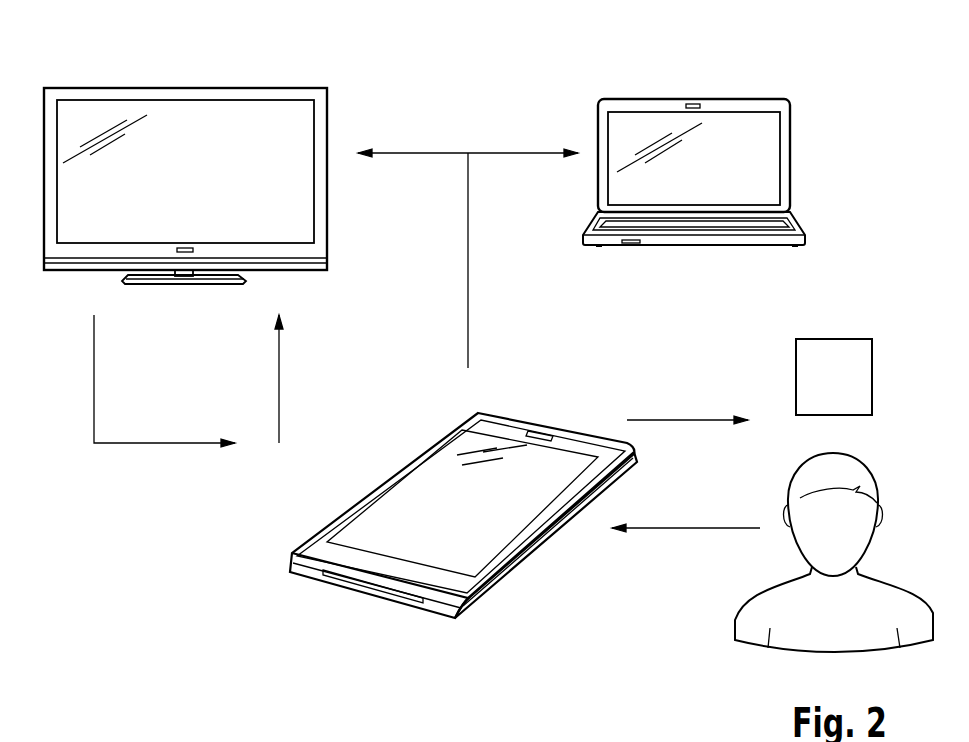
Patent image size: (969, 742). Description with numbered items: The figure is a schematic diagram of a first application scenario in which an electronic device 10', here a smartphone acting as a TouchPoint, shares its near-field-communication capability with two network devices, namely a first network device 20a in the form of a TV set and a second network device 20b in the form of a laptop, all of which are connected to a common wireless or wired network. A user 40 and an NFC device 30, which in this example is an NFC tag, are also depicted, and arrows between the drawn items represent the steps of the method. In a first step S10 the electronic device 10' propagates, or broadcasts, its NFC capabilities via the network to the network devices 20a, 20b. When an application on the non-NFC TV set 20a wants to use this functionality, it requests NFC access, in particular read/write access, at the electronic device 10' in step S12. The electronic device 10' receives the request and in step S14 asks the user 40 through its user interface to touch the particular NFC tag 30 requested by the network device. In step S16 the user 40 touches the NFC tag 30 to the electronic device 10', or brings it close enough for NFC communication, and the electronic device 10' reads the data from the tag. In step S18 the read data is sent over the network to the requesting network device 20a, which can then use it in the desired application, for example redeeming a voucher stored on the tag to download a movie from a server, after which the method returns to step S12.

The first network device 20a is at (247, 88).
The second network device 20b is at (750, 99).
The electronic device 10' is at (438, 528).
The NFC device 30 is at (850, 339).
The user 40 is at (893, 580).
The first step S10 is at (468, 283).
The step of requesting NFC access S12 is at (155, 443).
The step of asking the user S14 is at (687, 420).
The step of touching the NFC tag S16 is at (682, 528).
The step of sending the data S18 is at (279, 383).